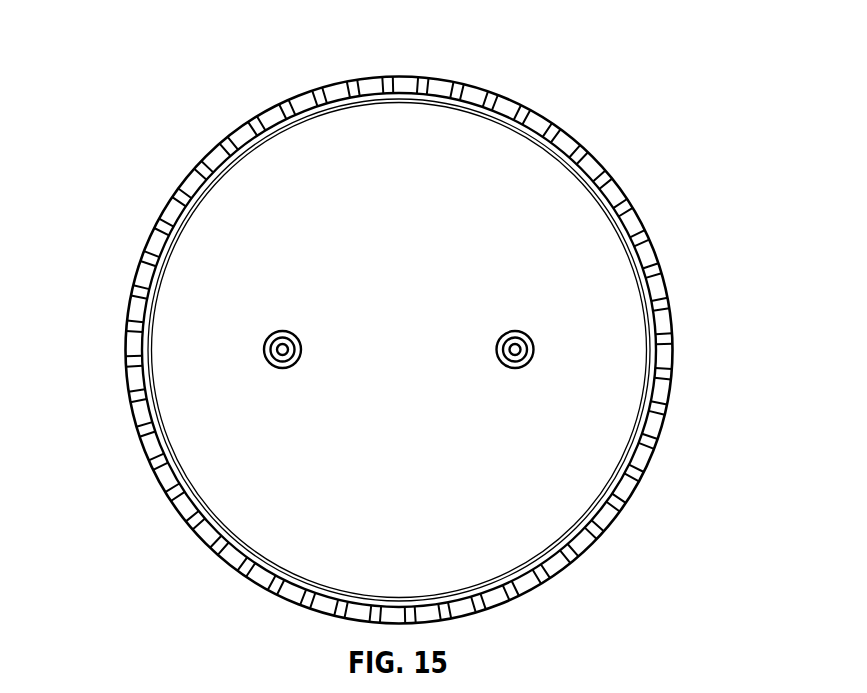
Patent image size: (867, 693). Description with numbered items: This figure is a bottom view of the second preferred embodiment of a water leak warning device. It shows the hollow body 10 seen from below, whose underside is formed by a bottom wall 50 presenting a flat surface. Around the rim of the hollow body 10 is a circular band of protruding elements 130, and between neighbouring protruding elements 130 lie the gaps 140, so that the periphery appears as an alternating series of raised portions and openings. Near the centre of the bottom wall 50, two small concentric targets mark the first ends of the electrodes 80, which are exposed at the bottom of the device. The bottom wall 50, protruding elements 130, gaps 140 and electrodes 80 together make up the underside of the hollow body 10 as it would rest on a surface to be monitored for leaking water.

The hollow body 10 is at (147, 103).
The protruding elements 130 is at (630, 215).
The gaps 140 is at (647, 268).
The bottom wall 50 is at (453, 222).
The electrodes 80 is at (282, 348).